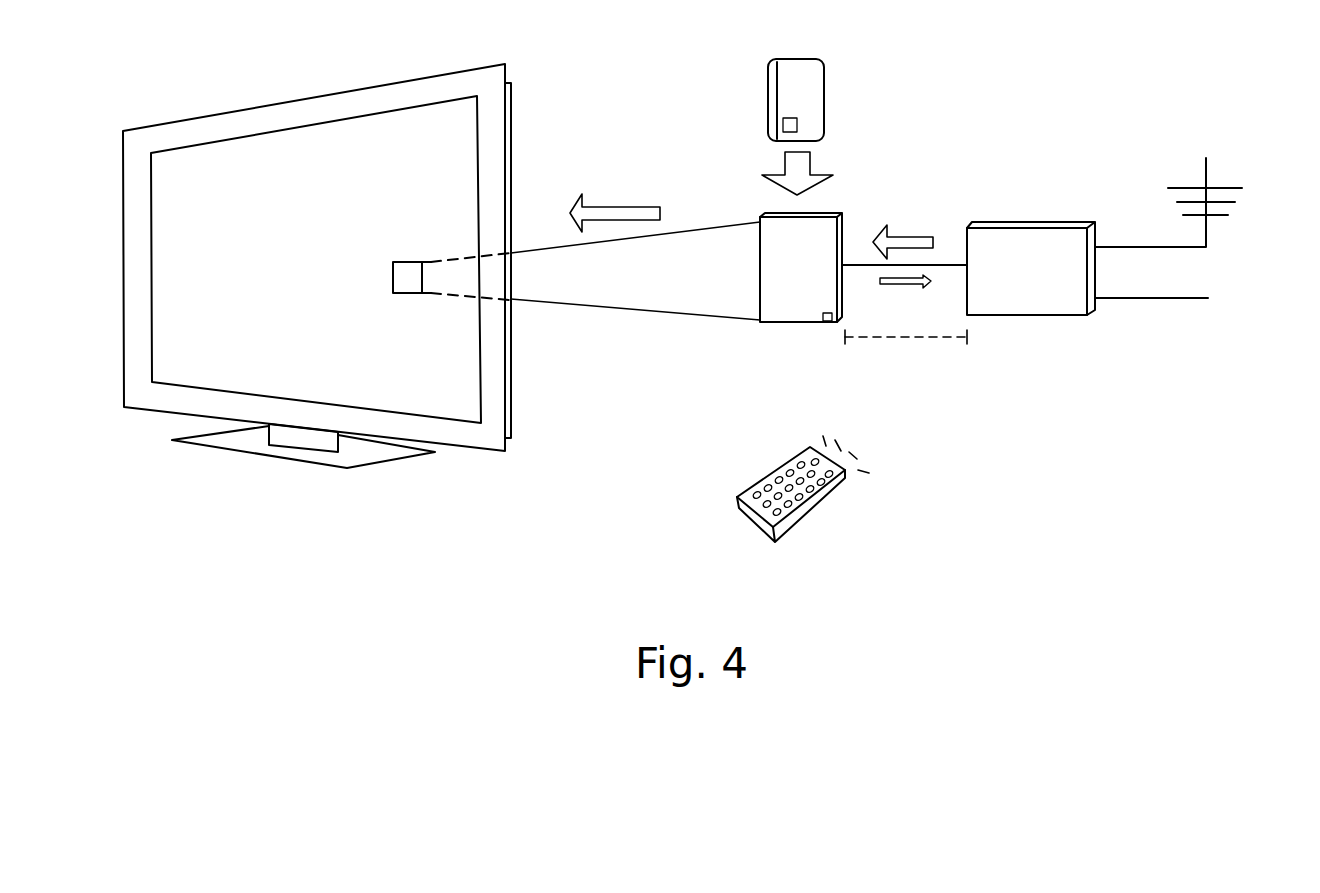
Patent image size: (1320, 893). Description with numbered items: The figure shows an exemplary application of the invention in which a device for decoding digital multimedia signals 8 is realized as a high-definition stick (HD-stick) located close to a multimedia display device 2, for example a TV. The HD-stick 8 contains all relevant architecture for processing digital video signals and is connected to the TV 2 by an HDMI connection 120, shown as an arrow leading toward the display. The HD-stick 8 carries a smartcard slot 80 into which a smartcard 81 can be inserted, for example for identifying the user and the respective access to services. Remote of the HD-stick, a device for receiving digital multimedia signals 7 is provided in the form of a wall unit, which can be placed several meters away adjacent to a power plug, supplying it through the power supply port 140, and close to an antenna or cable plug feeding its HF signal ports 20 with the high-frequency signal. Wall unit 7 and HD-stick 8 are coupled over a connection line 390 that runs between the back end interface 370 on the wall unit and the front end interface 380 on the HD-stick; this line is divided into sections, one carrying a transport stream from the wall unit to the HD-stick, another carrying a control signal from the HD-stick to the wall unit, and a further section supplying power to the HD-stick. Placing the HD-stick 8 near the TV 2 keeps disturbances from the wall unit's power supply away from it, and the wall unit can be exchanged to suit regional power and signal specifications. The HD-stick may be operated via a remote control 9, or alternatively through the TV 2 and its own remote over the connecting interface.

The multimedia display device 2 is at (472, 451).
The HDMI connection 120 is at (627, 203).
The smartcard slot 80 is at (767, 215).
The smartcard 81 is at (824, 87).
The device for decoding digital multimedia signals 8 is at (845, 186).
The front end interface 380 is at (847, 262).
The back end interface 370 is at (945, 263).
The connection line 390 is at (855, 267).
The device for receiving digital multimedia signals 7 is at (1048, 222).
The HF signal ports 20 is at (1208, 235).
The power supply port 140 is at (1148, 302).
The remote control 9 is at (787, 527).